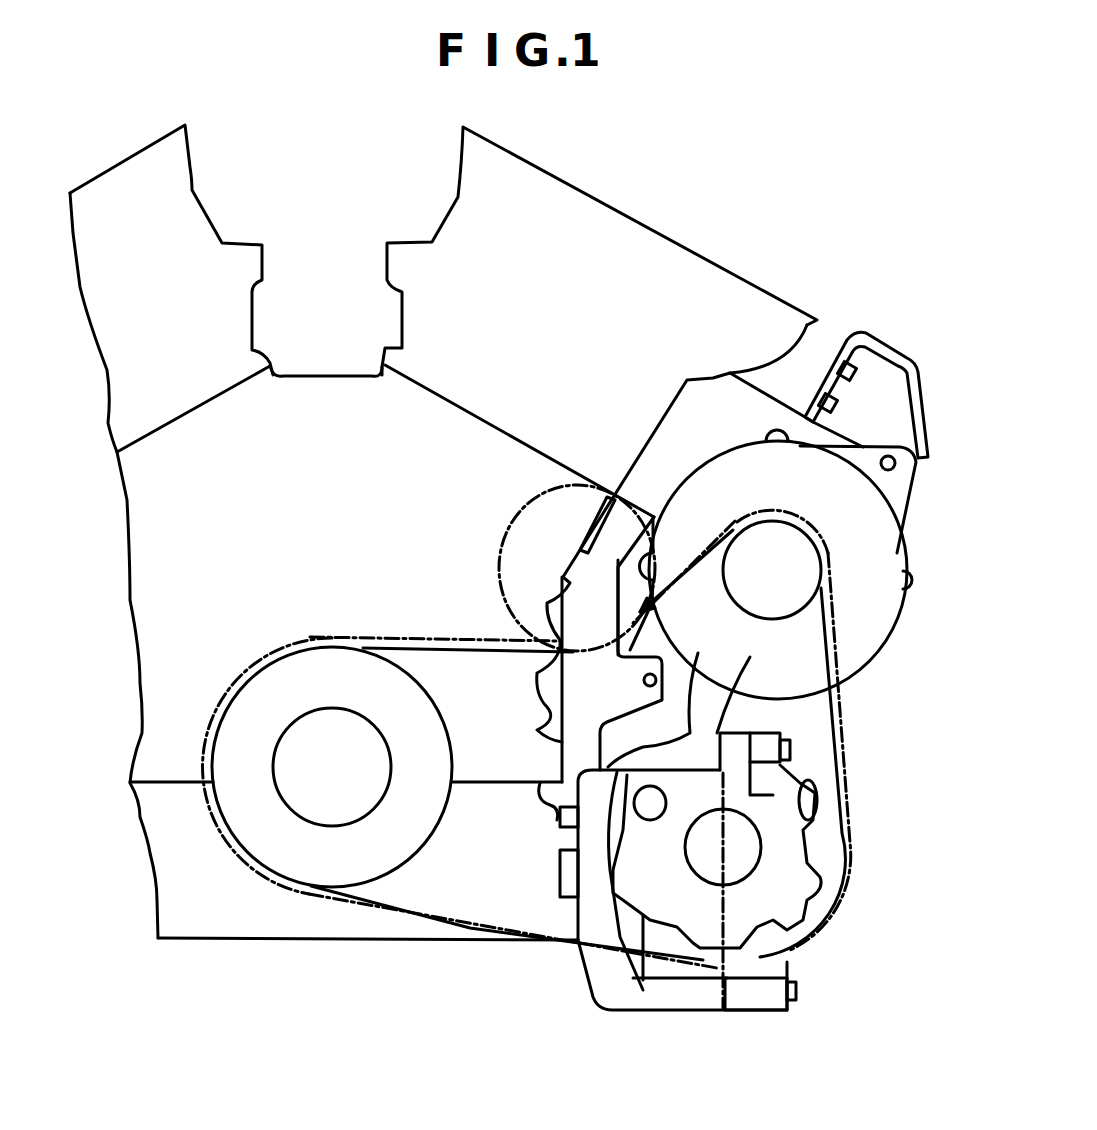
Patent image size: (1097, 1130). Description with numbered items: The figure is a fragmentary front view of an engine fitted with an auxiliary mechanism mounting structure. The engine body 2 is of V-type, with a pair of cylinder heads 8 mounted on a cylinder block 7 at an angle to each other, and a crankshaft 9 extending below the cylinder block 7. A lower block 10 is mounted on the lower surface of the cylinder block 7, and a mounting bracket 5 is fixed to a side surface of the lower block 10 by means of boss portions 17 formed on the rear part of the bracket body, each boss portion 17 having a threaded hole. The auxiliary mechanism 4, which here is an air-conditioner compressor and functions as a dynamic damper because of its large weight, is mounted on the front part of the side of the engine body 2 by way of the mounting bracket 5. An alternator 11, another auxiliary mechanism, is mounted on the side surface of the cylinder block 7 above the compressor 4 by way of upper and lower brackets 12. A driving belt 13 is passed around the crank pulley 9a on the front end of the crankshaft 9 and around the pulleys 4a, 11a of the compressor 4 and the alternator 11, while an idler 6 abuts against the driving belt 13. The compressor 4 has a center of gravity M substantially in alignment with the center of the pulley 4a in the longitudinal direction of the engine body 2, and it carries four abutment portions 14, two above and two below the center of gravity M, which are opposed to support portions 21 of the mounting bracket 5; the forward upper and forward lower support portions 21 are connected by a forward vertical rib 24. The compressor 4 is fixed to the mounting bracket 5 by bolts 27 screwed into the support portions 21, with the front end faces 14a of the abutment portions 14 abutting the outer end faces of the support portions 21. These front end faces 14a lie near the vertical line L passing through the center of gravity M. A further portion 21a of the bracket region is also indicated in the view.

The engine body 2 is at (316, 338).
The auxiliary mechanism 4 is at (827, 862).
The pulley 4a is at (820, 938).
The mounting bracket 5 is at (576, 983).
The idler 6 is at (500, 530).
The cylinder block 7 is at (152, 584).
The cylinder heads 8 is at (165, 197).
The crankshaft 9 is at (280, 737).
The crank pulley 9a is at (428, 698).
The lower block 10 is at (285, 921).
The alternator 11 is at (866, 608).
The pulley 11a is at (788, 520).
The brackets 12 is at (878, 378).
The driving belt 13 is at (378, 636).
The abutment portions 14 is at (775, 700).
The front end faces 14a is at (738, 695).
The boss portions 17 is at (557, 827).
The support portions 21 is at (632, 720).
The frame portion 21a is at (693, 672).
The forward vertical rib 24 is at (610, 850).
The bolts 27 is at (840, 718).
The center of gravity M is at (723, 847).
The vertical line L is at (730, 905).